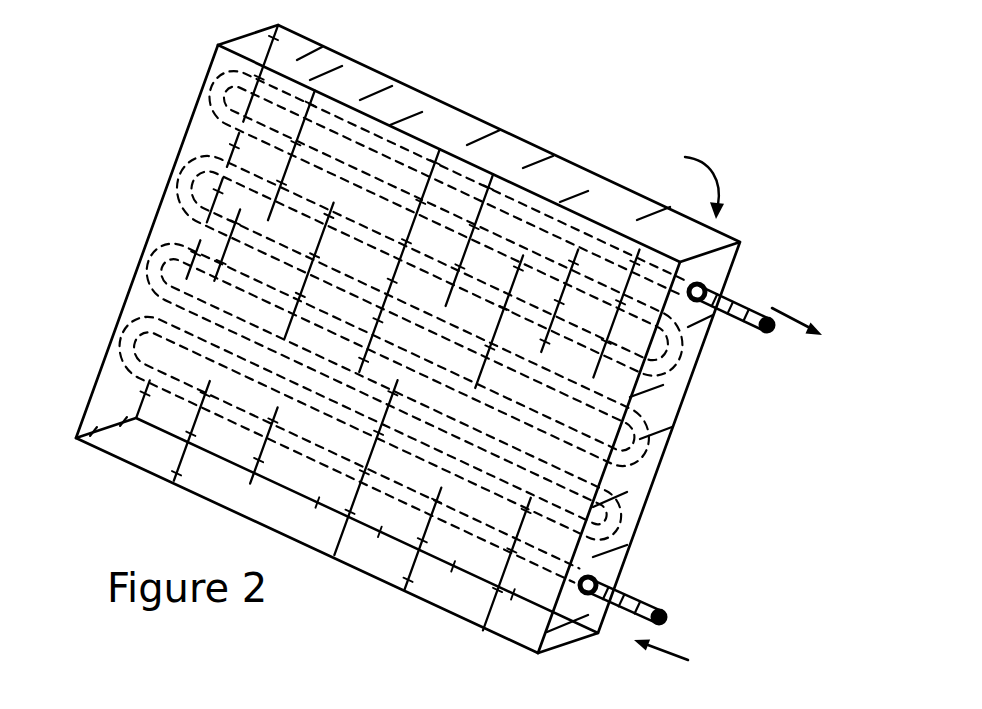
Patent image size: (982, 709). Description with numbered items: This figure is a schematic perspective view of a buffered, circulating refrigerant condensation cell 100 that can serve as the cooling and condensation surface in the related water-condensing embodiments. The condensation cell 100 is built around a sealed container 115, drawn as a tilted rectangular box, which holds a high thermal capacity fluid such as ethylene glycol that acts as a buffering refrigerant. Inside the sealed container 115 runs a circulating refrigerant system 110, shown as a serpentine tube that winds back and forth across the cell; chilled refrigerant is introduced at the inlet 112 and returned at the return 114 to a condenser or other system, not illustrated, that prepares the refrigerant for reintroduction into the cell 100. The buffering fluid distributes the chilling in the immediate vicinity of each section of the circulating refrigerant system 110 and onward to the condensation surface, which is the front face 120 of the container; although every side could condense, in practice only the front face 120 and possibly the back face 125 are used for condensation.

The condensation cell 100 is at (515, 115).
The circulating refrigerant system 110 is at (638, 582).
The refrigerant inlet 112 is at (647, 600).
The refrigerant return 114 is at (747, 298).
The sealed container 115 is at (113, 455).
The front face 120 is at (367, 278).
The back face 125 is at (678, 168).